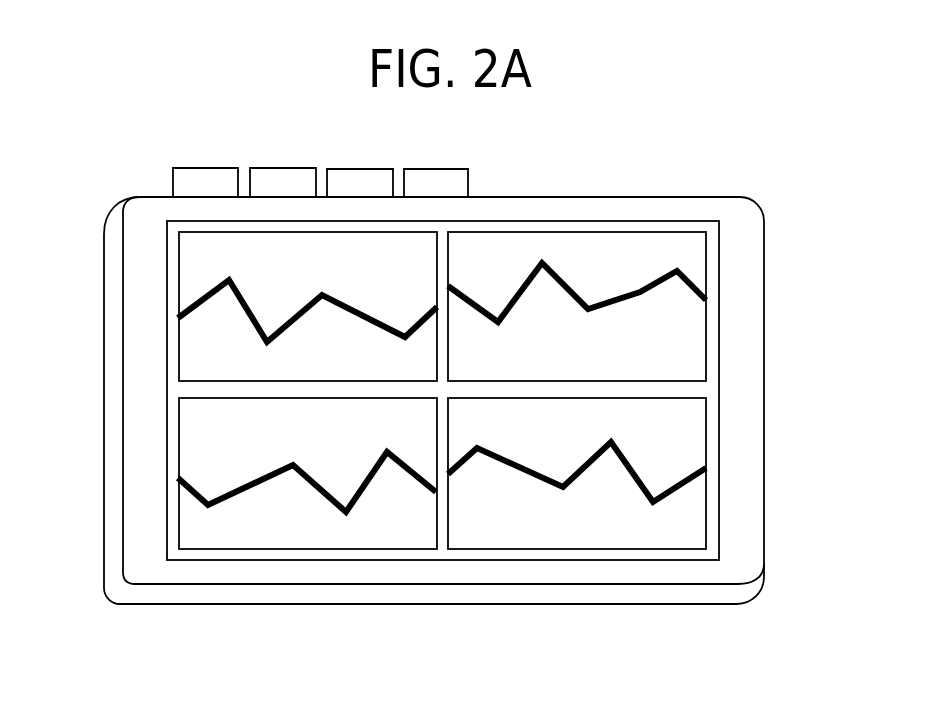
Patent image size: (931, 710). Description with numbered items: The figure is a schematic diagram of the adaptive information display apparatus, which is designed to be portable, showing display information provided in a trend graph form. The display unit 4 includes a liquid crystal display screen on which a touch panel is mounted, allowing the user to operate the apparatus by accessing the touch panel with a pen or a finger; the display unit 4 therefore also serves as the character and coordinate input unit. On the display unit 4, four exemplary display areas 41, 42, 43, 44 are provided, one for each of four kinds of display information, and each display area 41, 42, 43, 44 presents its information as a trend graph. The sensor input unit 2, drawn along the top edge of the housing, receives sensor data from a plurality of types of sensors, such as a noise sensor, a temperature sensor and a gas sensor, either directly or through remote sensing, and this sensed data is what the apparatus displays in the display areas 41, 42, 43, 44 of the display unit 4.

The sensor input unit 2 is at (357, 168).
The display unit 4 is at (620, 222).
The display area 41 is at (178, 269).
The display area 42 is at (706, 344).
The display area 43 is at (178, 436).
The display area 44 is at (706, 513).